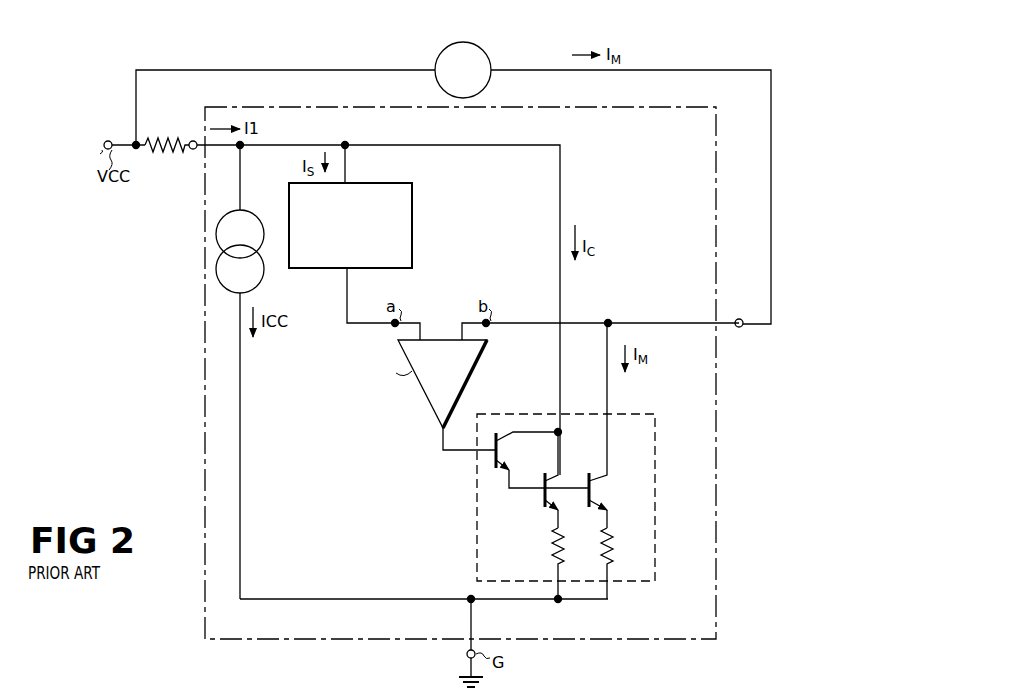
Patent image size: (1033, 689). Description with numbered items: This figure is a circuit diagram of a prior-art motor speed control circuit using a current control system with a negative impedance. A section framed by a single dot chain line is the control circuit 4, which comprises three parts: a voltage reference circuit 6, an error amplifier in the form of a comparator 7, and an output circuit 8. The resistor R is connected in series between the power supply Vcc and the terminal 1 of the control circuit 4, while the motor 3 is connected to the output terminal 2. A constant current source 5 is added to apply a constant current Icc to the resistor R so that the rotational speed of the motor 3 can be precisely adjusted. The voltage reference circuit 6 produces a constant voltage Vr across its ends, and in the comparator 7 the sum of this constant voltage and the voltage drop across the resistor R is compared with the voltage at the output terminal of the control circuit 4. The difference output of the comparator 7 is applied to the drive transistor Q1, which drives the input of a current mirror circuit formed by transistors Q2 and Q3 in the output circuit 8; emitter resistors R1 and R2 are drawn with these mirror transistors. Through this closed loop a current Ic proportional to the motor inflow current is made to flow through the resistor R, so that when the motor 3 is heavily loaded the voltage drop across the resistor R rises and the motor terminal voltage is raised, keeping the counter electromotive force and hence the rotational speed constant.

The terminal 1 is at (193, 150).
The output terminal 2 is at (739, 328).
The motor 3 is at (478, 47).
The control circuit 4 is at (716, 448).
The constant current source 5 is at (240, 208).
The voltage reference circuit 6 is at (384, 183).
The comparator 7 is at (480, 358).
The output circuit 8 is at (655, 414).
The resistor R is at (167, 136).
The drive transistor Q1 is at (542, 460).
The current mirror transistor Q2 is at (553, 480).
The current mirror transistor Q3 is at (599, 480).
The resistor R1 is at (548, 548).
The resistor R2 is at (597, 548).